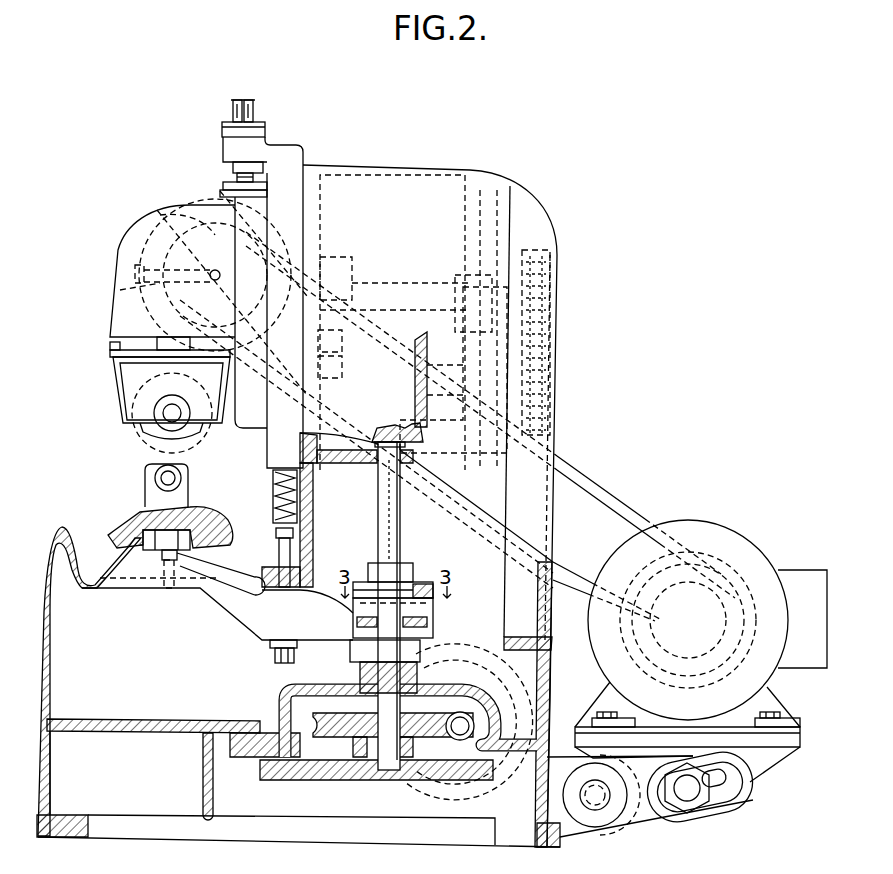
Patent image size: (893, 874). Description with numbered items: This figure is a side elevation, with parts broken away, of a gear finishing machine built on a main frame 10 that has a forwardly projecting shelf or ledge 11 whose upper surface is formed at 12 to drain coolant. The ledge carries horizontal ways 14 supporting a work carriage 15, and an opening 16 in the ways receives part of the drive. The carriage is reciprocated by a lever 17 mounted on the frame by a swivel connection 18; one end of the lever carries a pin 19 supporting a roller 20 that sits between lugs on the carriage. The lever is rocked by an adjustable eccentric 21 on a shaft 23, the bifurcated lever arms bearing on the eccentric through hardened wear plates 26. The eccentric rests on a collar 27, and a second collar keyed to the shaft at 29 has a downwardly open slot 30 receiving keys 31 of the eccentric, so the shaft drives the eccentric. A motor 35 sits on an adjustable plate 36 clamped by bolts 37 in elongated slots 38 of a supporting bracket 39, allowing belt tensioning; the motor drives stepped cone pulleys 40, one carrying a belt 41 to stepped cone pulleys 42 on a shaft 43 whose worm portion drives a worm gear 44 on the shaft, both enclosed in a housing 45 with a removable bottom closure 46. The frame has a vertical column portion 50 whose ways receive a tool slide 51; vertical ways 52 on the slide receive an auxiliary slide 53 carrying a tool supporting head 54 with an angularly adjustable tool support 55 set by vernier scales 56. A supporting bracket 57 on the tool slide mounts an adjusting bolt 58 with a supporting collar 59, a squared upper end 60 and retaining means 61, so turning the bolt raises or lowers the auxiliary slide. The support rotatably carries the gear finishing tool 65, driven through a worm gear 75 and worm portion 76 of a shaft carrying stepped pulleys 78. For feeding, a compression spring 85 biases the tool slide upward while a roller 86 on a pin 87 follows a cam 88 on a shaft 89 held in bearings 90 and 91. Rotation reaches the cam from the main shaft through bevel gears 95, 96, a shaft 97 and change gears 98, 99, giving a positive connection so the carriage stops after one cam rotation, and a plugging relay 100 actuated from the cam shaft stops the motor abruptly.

The main frame 10 is at (553, 848).
The shelf or ledge 11 is at (38, 775).
The drainage formation 12 is at (80, 530).
The horizontal ways 14 is at (138, 548).
The work carriage 15 is at (142, 512).
The opening 16 is at (152, 550).
The lever 17 is at (240, 620).
The swivel connection 18 is at (265, 650).
The pin 19 is at (180, 592).
The roller 20 is at (163, 590).
The adjustable eccentric 21 is at (433, 608).
The shaft 23 is at (400, 524).
The hardened wear plates 26 is at (415, 582).
The collar 27 is at (352, 655).
The key 29 is at (368, 563).
The downwardly open slot 30 is at (420, 597).
The lugs or keys 31 is at (440, 603).
The motor 35 is at (756, 548).
The adjustable plate 36 is at (793, 747).
The bolts 37 is at (707, 812).
The elongated slots 38 is at (748, 783).
The supporting bracket 39 is at (662, 826).
The stepped cone pulleys 40 is at (788, 563).
The belt 41 is at (566, 633).
The stepped cone pulleys 42 is at (454, 670).
The shaft 43 is at (470, 772).
The worm gear 44 is at (340, 738).
The housing 45 is at (280, 691).
The removable bottom closure 46 is at (290, 780).
The vertical column portion 50 is at (463, 170).
The tool slide 51 is at (290, 180).
The vertical ways 52 is at (252, 430).
The auxiliary slide 53 is at (232, 194).
The tool supporting head 54 is at (132, 232).
The angularly adjustable tool support 55 is at (114, 385).
The vernier scales 56 is at (110, 352).
The supporting bracket 57 is at (283, 152).
The adjusting bolt 58 is at (237, 178).
The supporting collar 59 is at (266, 124).
The squared upper end 60 is at (238, 98).
The retaining means 61 is at (233, 166).
The gear finishing tool 65 is at (134, 440).
The worm gear 75 is at (120, 290).
The worm portion 76 is at (106, 265).
The stepped pulleys 78 is at (178, 228).
The compression spring 85 is at (273, 493).
The roller 86 is at (322, 385).
The pin 87 is at (322, 359).
The cam 88 is at (336, 262).
The shaft 89 is at (394, 290).
The bearing 90 is at (368, 276).
The bearing 91 is at (438, 377).
The bevel gear 95 is at (397, 425).
The bevel gear 96 is at (443, 370).
The shaft 97 is at (562, 421).
The change gear 98 is at (560, 362).
The change gear 99 is at (555, 315).
The plugging relay 100 is at (518, 270).